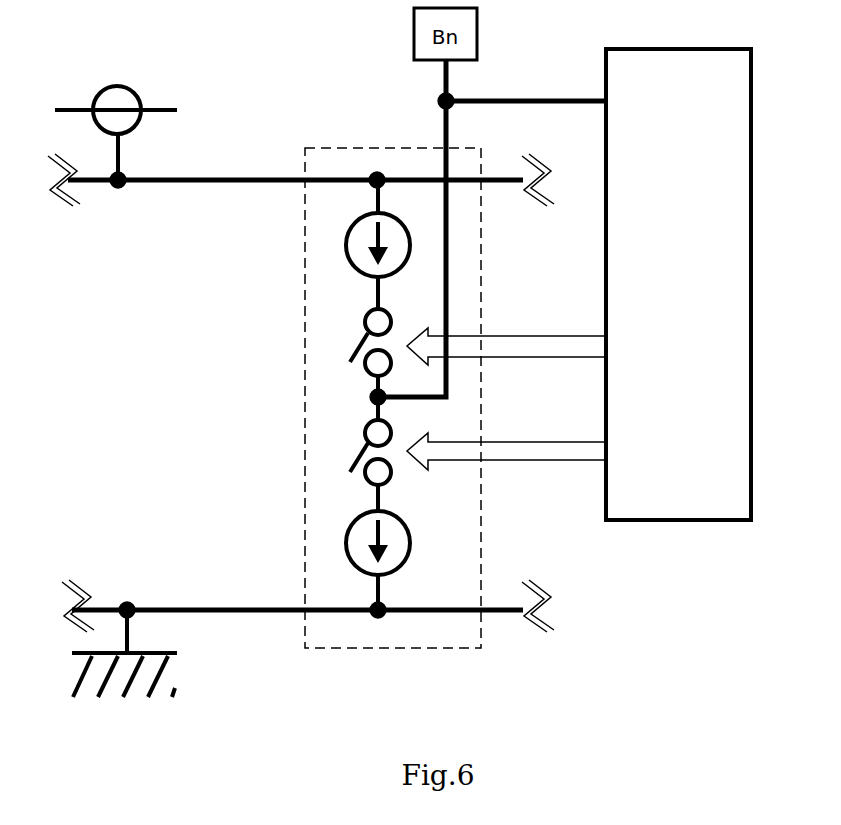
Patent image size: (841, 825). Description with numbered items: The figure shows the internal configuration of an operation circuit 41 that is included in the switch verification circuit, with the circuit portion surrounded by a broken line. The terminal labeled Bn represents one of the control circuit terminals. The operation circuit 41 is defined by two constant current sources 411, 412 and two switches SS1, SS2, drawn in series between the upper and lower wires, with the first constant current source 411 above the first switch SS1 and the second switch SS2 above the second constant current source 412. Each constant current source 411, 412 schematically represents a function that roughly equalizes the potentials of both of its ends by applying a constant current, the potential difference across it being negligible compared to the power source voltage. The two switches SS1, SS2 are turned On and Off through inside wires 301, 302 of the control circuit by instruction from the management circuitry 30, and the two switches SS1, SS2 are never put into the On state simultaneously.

The management circuitry 30 is at (650, 520).
The operation circuit 41 is at (347, 363).
The constant current source 411 is at (345, 243).
The constant current source 412 is at (345, 540).
The switch SS1 is at (350, 345).
The switch SS2 is at (350, 452).
The inside wire 301 is at (498, 335).
The inside wire 302 is at (497, 460).